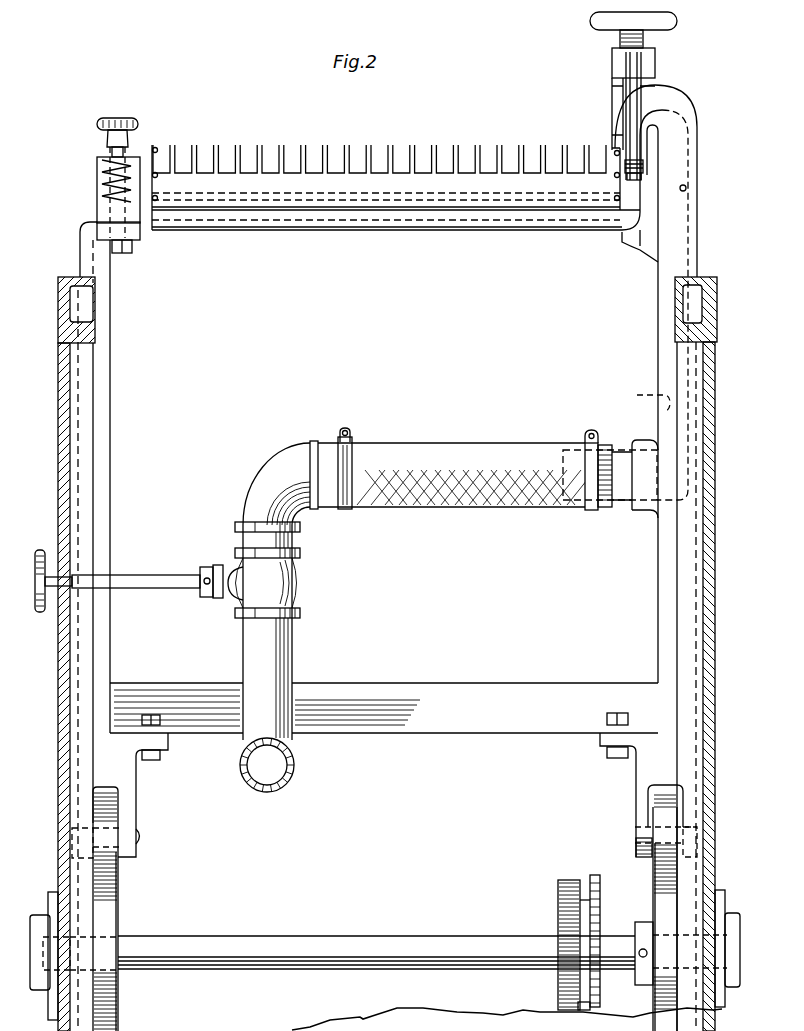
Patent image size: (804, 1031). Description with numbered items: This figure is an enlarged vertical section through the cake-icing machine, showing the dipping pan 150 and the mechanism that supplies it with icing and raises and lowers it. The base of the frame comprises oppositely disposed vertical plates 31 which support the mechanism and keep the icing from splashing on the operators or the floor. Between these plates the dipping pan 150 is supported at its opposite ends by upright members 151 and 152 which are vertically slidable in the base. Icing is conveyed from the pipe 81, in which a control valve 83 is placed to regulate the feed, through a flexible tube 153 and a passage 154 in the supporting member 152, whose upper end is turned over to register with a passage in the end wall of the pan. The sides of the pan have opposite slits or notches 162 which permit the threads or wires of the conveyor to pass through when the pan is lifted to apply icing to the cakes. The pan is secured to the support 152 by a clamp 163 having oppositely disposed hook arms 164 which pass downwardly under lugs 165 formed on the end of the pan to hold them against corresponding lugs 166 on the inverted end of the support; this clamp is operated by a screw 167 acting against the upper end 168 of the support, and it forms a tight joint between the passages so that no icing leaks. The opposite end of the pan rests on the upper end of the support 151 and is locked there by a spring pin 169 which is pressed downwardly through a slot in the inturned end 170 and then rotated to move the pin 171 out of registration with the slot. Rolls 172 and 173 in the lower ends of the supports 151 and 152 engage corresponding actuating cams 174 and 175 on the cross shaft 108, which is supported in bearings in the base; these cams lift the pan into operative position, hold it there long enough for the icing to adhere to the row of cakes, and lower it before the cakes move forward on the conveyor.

The vertical plates 31 is at (60, 722).
The pipe 81 is at (273, 468).
The control valve 83 is at (212, 568).
The shaft 108 is at (368, 940).
The dipping pan 150 is at (285, 180).
The upright member 151 is at (108, 362).
The upright member 152 is at (658, 366).
The flexible tube 153 is at (468, 446).
The passage 154 is at (686, 189).
The slits or notches 162 is at (398, 146).
The clamp 163 is at (655, 62).
The hook arms 164 is at (633, 108).
The lugs 165 is at (647, 157).
The lugs 166 is at (612, 140).
The screw 167 is at (677, 23).
The upper end 168 is at (614, 85).
The spring pin 169 is at (128, 147).
The inturned end 170 is at (142, 240).
The pin 171 is at (132, 253).
The roll 172 is at (108, 810).
The roll 173 is at (665, 805).
The actuating cam 174 is at (110, 905).
The actuating cam 175 is at (658, 893).